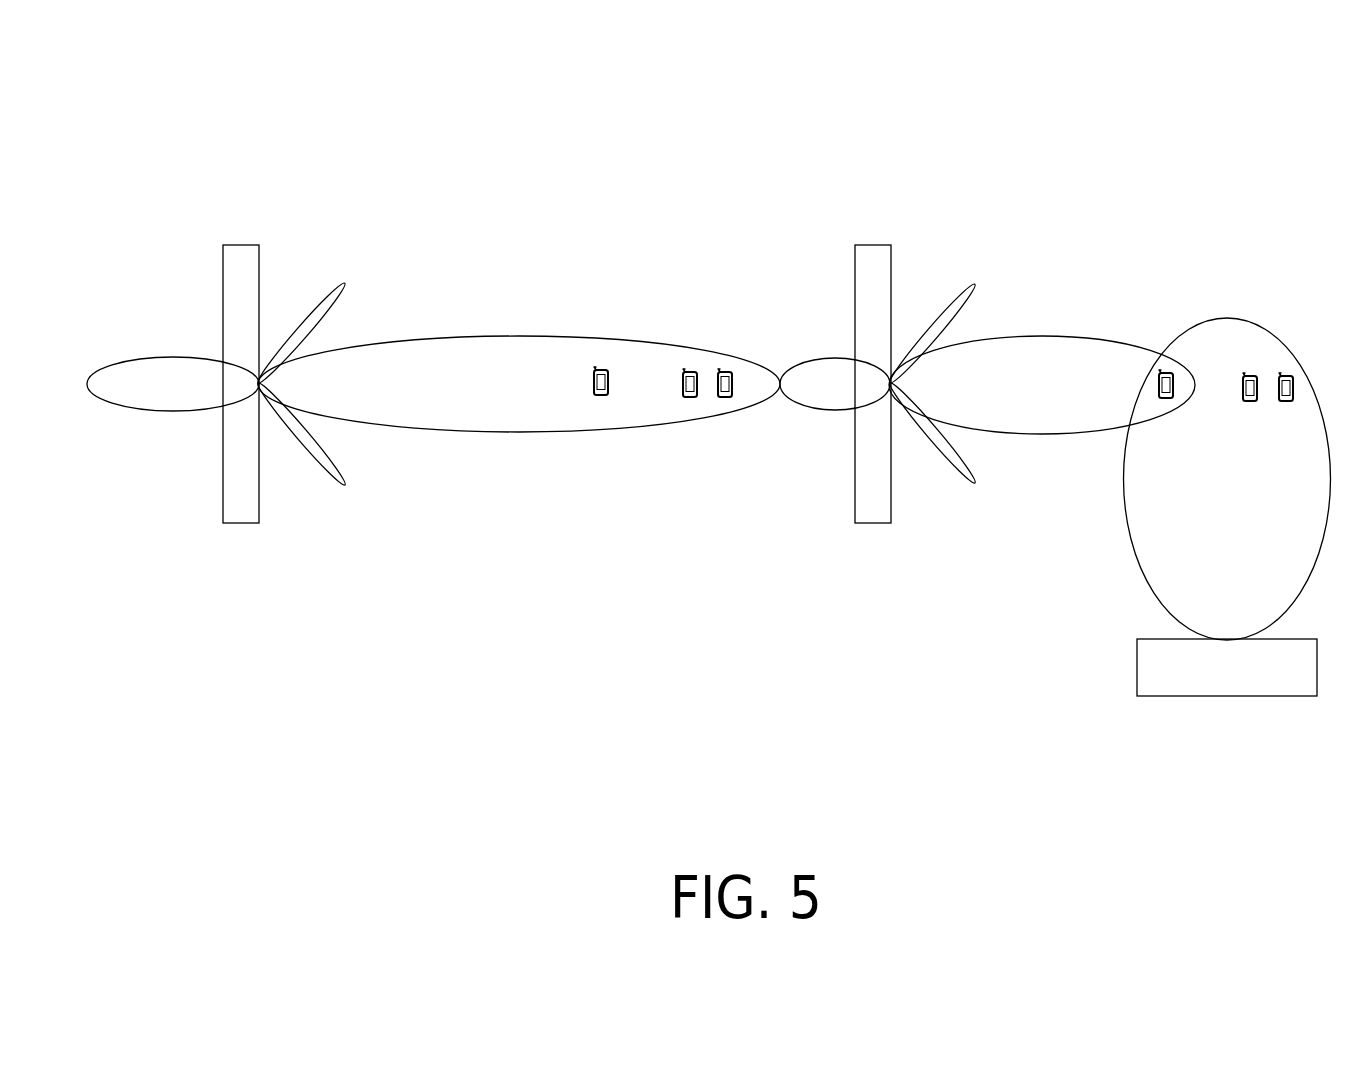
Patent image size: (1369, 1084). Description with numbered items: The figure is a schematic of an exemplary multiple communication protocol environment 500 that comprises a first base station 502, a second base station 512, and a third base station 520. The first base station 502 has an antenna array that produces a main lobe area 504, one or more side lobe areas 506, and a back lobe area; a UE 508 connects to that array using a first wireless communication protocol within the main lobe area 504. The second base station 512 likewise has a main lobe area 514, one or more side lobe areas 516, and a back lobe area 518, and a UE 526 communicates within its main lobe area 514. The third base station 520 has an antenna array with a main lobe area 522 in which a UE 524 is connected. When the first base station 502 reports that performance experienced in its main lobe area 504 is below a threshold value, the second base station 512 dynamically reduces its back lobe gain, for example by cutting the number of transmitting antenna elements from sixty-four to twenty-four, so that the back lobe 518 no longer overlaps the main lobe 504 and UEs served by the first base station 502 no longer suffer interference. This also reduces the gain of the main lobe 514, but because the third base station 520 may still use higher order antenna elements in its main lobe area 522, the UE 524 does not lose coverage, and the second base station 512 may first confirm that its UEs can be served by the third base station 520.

The multiple communication protocol environment 500 is at (118, 146).
The first base station 502 is at (240, 245).
The main lobe area 504 is at (672, 332).
The side lobe areas 506 is at (358, 277).
The UE 508 is at (594, 413).
The second base station 512 is at (872, 245).
The main lobe area 514 is at (1141, 332).
The side lobe areas 516 is at (988, 276).
The back lobe area 518 is at (780, 361).
The third base station 520 is at (1226, 697).
The main lobe area 522 is at (1105, 521).
The UE 524 is at (1296, 419).
The UE 526 is at (1154, 411).